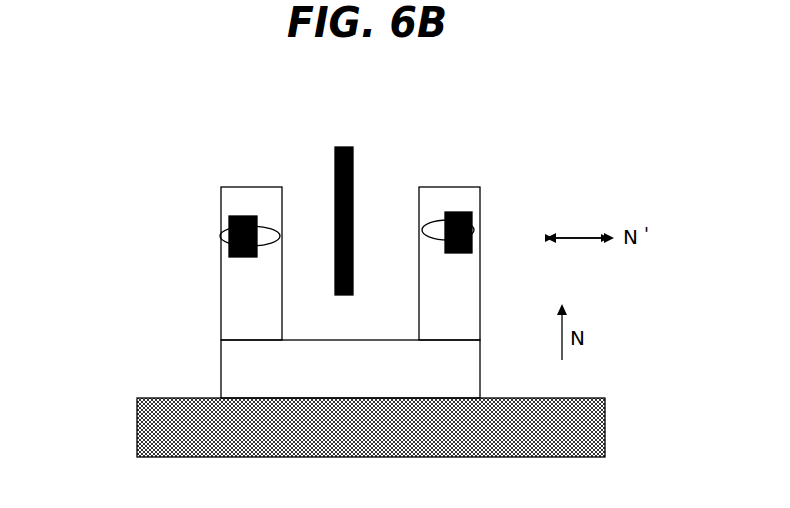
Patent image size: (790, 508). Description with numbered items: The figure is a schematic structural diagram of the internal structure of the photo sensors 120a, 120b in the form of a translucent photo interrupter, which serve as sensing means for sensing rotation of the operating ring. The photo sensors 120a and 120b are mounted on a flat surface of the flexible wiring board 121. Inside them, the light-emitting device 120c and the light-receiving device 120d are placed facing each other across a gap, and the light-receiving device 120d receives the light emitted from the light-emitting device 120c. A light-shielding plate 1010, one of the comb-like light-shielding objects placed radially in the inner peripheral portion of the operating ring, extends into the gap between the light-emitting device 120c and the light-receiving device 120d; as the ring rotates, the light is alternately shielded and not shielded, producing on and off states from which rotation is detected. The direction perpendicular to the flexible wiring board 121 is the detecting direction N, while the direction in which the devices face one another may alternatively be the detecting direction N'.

The light-shielding plate 1010 is at (353, 152).
The photo sensor 120a is at (221, 353).
The photo sensor 120b is at (252, 369).
The light-emitting device 120c is at (229, 236).
The light-receiving device 120d is at (472, 230).
The flexible wiring board 121 is at (137, 418).